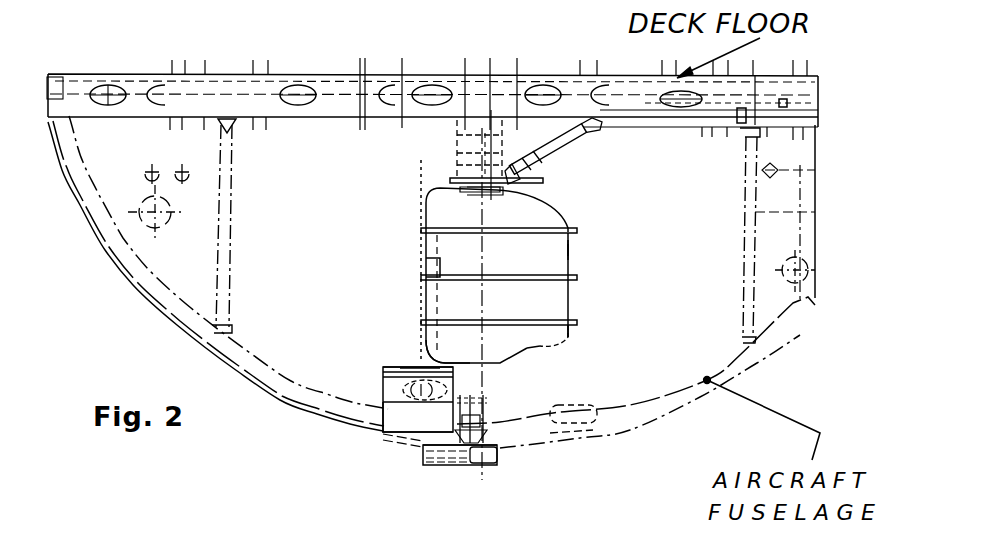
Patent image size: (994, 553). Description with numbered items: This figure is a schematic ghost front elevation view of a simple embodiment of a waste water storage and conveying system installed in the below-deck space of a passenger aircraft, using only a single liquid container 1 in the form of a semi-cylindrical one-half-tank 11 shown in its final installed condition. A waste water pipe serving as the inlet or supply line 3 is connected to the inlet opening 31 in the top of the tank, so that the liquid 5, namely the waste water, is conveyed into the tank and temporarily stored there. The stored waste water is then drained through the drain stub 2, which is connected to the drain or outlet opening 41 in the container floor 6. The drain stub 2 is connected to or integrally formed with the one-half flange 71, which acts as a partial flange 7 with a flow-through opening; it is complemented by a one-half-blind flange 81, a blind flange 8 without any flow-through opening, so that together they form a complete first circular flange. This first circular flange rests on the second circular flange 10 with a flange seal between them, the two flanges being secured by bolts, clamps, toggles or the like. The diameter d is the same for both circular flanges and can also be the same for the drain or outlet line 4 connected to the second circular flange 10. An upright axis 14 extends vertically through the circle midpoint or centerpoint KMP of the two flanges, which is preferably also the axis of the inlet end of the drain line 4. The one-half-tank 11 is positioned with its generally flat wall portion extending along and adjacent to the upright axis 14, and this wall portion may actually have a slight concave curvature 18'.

The liquid container 1 is at (569, 254).
The drain stub 2 is at (421, 364).
The inlet or supply line 3 is at (555, 145).
The drain or outlet line 4 is at (463, 393).
The liquid (waste water) 5 is at (515, 261).
The container floor 6 is at (536, 348).
The partial flange 7 is at (450, 364).
The blind flange 8 is at (383, 377).
The second circular flange 10 is at (392, 417).
The one-half-tank 11 is at (621, 239).
The upright axis 14 is at (420, 185).
The slight concave curvature 18' is at (396, 249).
The inlet opening 31 is at (502, 197).
The drain or outlet opening 41 is at (440, 354).
The one-half flange 71 is at (533, 349).
The one-half-blind flange 81 is at (409, 466).
The circle midpoint or centerpoint KMP is at (423, 370).
The diameter d is at (451, 428).